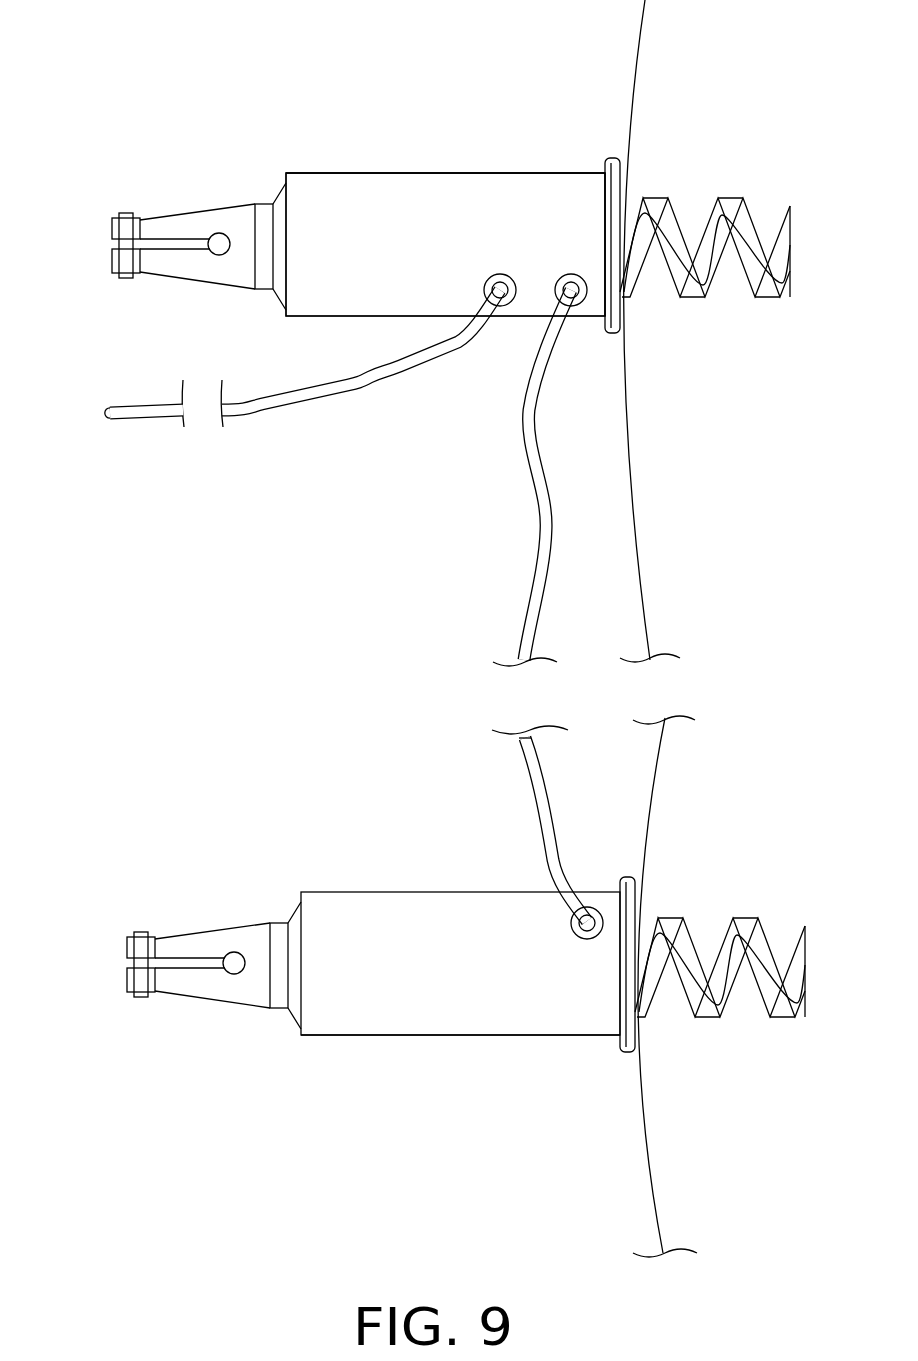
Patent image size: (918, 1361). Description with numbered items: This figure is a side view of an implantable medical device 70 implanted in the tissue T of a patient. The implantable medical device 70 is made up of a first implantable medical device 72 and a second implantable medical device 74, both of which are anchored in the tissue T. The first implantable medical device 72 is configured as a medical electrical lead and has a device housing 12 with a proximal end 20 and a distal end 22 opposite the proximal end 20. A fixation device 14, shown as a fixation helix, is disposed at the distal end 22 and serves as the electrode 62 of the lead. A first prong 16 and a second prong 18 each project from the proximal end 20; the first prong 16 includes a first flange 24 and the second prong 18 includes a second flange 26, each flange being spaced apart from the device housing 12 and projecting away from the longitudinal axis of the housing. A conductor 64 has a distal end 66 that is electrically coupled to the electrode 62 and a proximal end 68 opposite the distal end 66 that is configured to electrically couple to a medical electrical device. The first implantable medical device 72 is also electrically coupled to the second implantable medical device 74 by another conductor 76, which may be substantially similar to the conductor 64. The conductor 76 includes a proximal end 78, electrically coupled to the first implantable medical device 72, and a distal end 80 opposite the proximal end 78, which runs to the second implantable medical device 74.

The device housing 12 is at (400, 173).
The fixation device 14 is at (712, 582).
The first prong 16 is at (186, 213).
The second prong 18 is at (165, 276).
The proximal end 20 is at (262, 204).
The distal end 22 is at (612, 158).
The first flange 24 is at (123, 213).
The second flange 26 is at (122, 280).
The electrode 62 is at (666, 200).
The conductor 64 is at (302, 381).
The distal end 66 is at (493, 320).
The proximal end 68 is at (112, 420).
The implantable medical device 70 is at (346, 133).
The first implantable medical device 72 is at (507, 160).
The second implantable medical device 74 is at (470, 1050).
The conductor 76 is at (532, 585).
The proximal end 78 is at (561, 320).
The distal end 80 is at (585, 912).
The tissue T is at (583, 0).